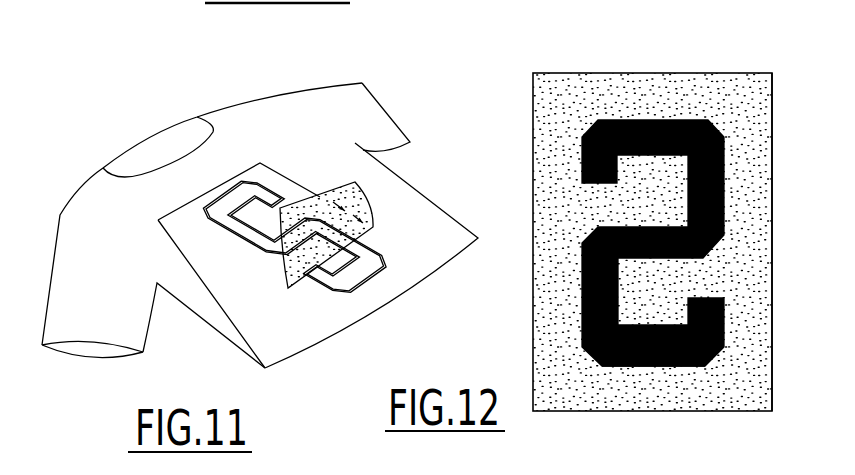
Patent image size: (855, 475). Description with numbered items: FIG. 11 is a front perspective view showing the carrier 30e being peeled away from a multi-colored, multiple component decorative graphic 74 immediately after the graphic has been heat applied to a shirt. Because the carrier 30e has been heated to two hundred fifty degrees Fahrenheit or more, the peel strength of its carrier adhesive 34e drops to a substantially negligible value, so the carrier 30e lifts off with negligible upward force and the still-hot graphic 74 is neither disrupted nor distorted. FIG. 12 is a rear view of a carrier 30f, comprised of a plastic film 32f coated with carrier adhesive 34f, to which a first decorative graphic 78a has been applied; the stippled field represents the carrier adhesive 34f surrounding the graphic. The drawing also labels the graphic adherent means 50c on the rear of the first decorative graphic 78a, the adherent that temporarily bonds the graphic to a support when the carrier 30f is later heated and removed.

In FIG. 11, the carrier 30e is at (282, 270).
In FIG. 11, the carrier adhesive 34e is at (330, 193).
In FIG. 11, the multi-colored, multiple component decorative graphic 74 is at (383, 243).
In FIG. 12, the carrier 30f is at (762, 386).
In FIG. 12, the plastic film 32f is at (752, 198).
In FIG. 12, the carrier adhesive 34f is at (725, 317).
In FIG. 12, the first decorative graphic 78a is at (658, 116).
In FIG. 12, the lower edge of numeral 50c is at (622, 367).